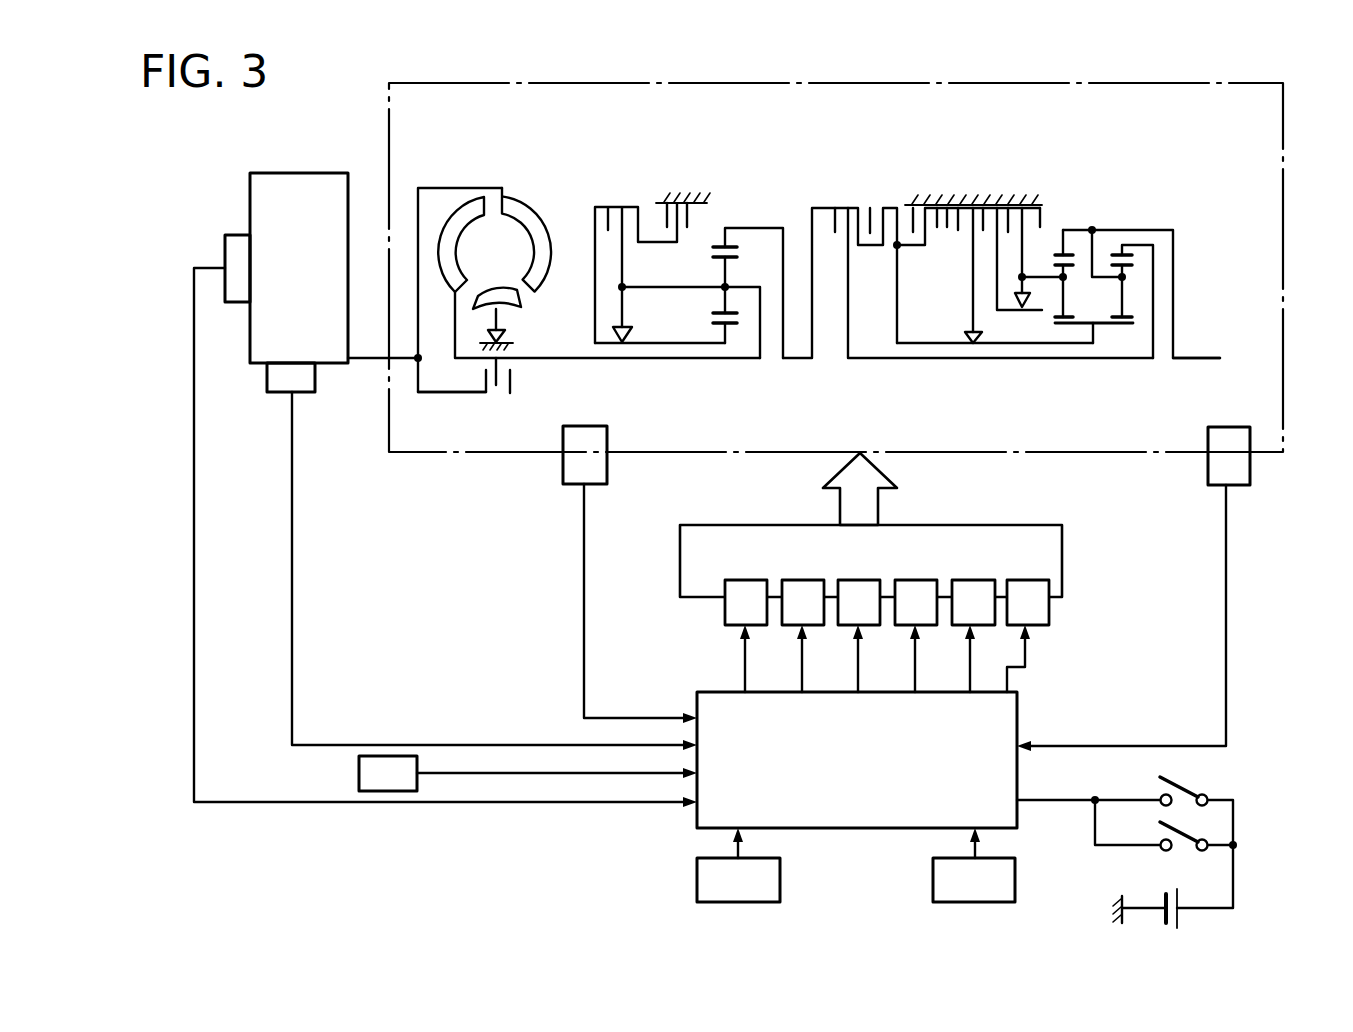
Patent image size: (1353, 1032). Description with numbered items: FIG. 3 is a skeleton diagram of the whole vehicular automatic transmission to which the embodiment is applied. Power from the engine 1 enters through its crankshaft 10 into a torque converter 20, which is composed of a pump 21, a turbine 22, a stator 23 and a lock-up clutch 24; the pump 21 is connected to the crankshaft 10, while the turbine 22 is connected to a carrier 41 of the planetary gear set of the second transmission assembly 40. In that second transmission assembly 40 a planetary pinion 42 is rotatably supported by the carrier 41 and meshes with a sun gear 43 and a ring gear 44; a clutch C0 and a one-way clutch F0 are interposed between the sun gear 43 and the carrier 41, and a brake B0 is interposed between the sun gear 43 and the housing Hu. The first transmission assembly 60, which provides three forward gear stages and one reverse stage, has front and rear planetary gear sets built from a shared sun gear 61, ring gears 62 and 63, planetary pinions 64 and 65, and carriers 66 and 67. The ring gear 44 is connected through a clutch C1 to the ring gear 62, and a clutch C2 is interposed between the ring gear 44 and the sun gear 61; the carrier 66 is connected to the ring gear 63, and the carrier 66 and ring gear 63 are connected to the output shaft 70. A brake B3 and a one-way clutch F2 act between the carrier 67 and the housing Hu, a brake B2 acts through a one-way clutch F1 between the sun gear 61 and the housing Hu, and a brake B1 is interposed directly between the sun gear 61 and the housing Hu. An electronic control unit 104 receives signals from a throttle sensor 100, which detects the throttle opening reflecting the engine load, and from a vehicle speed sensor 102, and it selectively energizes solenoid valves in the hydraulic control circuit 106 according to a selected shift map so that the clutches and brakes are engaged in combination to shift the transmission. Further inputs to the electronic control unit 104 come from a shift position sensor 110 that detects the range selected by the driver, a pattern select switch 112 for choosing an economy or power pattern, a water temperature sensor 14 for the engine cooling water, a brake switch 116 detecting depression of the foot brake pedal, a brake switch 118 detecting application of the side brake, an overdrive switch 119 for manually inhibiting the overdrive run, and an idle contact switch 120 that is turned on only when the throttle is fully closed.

The engine 1 is at (283, 185).
The crankshaft 10 is at (370, 358).
The water temperature sensor 14 is at (240, 240).
The torque converter 20 is at (589, 250).
The pump 21 is at (517, 211).
The turbine 22 is at (460, 229).
The stator 23 is at (513, 304).
The lock-up clutch 24 is at (455, 393).
The second transmission assembly 40 is at (680, 233).
The carrier 41 is at (745, 287).
The planetary pinion 42 is at (713, 255).
The sun gear 43 is at (713, 320).
The ring gear 44 is at (722, 240).
The first transmission assembly 60 is at (1121, 261).
The sun gear 61 is at (1100, 325).
The ring gear 62 is at (1114, 253).
The ring gear 63 is at (1063, 253).
The planetary pinion 64 is at (1128, 268).
The planetary pinion 65 is at (1070, 267).
The carrier 66 is at (1108, 282).
The carrier 67 is at (1040, 275).
The output shaft 70 is at (1197, 358).
The throttle sensor 100 is at (275, 388).
The vehicle speed sensor 102 is at (1228, 433).
The electronic control unit 104 is at (848, 828).
The hydraulic control circuit 106 is at (1005, 525).
The shift position sensor 110 is at (585, 432).
The pattern select switch 112 is at (360, 774).
The brake switch 116 is at (1193, 785).
The brake switch 118 is at (1182, 847).
The overdrive switch 119 is at (697, 878).
The idle contact switch 120 is at (1015, 879).
The clutch C0 is at (622, 206).
The clutch C1 is at (845, 205).
The clutch C2 is at (883, 206).
The brake B0 is at (688, 215).
The brake B1 is at (948, 205).
The brake B2 is at (983, 205).
The brake B3 is at (1040, 205).
The one-way clutch F0 is at (624, 330).
The one-way clutch F1 is at (968, 334).
The one-way clutch F2 is at (1019, 275).
The housing Hu is at (670, 203).